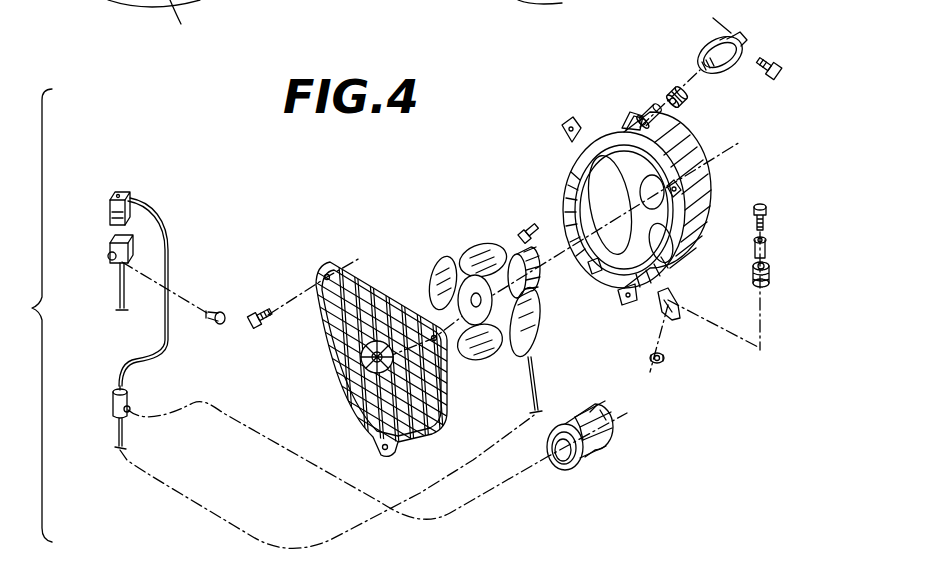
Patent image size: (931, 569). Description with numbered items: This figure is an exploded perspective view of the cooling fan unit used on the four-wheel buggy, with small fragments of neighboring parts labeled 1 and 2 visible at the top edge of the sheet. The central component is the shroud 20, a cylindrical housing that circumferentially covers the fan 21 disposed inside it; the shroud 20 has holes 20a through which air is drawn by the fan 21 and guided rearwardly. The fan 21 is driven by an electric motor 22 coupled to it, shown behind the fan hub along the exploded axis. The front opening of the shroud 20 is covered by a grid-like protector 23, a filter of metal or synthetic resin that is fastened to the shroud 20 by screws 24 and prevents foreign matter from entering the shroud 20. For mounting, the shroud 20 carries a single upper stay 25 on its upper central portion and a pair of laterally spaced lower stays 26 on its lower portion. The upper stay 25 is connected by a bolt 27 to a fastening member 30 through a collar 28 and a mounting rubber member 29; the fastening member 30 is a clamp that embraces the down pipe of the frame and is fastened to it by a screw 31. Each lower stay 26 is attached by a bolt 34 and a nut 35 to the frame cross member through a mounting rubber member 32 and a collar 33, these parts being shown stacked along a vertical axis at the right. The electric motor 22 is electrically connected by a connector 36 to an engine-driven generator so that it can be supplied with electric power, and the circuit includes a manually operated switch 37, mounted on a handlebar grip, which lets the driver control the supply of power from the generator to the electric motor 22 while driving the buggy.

The heater unit (adjacent figure) 1 is at (154, 20).
The housing (adjacent figure) 2 is at (540, 6).
The shroud 20 is at (566, 165).
The holes 20a is at (607, 188).
The fan 21 is at (441, 257).
The electric motor 22 is at (538, 285).
The grid-like protector 23 is at (381, 282).
The screws 24 is at (263, 308).
The upper stay 25 is at (627, 128).
The lower stays 26 is at (595, 275).
The bolt 27 is at (518, 227).
The collar 28 is at (655, 110).
The mounting rubber member 29 is at (673, 85).
The fastening member 30 is at (718, 50).
The screw 31 is at (762, 58).
The mounting rubber member 32 is at (752, 280).
The collar 33 is at (754, 244).
The bolt 34 is at (760, 203).
The nut 35 is at (668, 358).
The connector 36 is at (103, 232).
The manually operated switch 37 is at (606, 456).